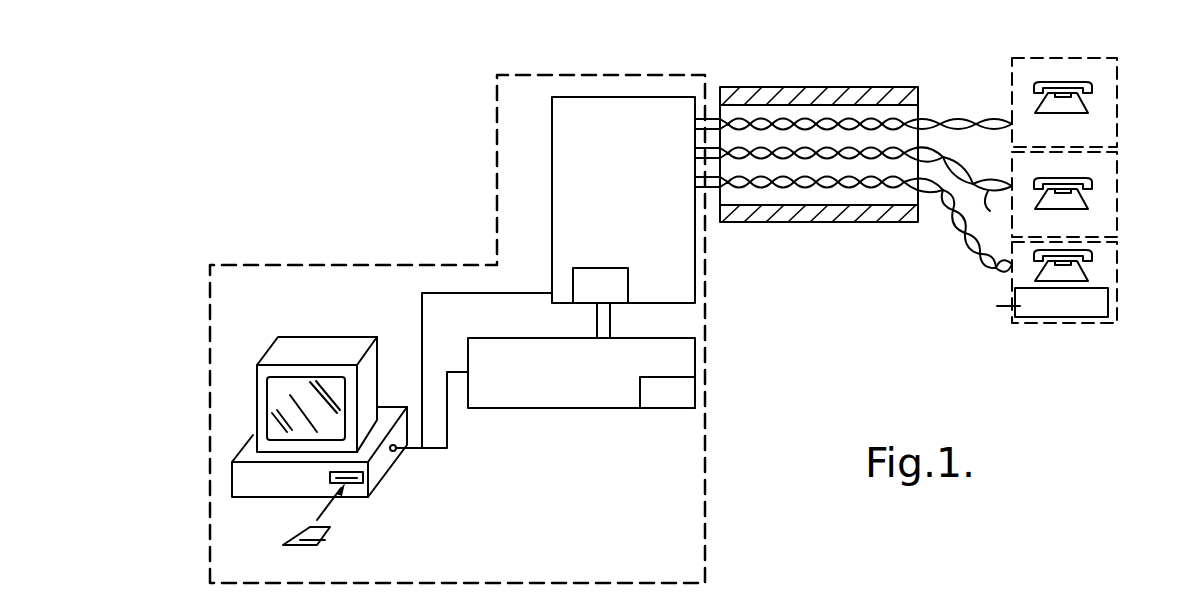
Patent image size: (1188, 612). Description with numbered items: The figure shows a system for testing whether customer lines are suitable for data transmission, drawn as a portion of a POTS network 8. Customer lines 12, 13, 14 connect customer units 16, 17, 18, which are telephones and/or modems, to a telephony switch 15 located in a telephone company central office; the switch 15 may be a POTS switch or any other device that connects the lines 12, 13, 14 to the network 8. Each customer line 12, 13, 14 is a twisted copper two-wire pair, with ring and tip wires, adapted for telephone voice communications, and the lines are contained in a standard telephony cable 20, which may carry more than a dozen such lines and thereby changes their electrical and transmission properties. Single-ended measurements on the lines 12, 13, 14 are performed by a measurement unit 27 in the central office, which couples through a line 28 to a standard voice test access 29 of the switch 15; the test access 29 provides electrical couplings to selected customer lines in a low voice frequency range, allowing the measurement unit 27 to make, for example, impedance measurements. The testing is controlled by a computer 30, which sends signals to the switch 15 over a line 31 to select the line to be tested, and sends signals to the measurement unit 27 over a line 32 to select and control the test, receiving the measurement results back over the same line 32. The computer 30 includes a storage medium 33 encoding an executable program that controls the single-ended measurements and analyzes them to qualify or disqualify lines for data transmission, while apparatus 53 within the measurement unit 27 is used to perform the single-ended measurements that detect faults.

The POTS network 8 is at (806, 158).
The customer line 12 is at (968, 122).
The customer line 13 is at (958, 194).
The customer line 14 is at (948, 228).
The telephony switch 15 is at (647, 186).
The customer unit 16 is at (1117, 97).
The customer unit 17 is at (1117, 190).
The customer unit 18 is at (1117, 275).
The telephony cable 20 is at (828, 223).
The measurement unit 27 is at (695, 357).
The line 28 is at (605, 320).
The voice test access 29 is at (615, 288).
The computer 30 is at (385, 470).
The line 31 is at (420, 314).
The line 32 is at (447, 427).
The storage medium 33 is at (322, 538).
The apparatus 53 is at (668, 398).